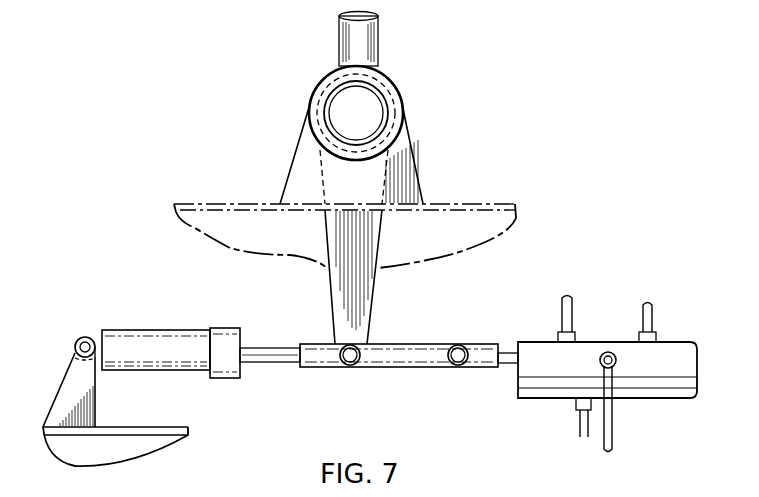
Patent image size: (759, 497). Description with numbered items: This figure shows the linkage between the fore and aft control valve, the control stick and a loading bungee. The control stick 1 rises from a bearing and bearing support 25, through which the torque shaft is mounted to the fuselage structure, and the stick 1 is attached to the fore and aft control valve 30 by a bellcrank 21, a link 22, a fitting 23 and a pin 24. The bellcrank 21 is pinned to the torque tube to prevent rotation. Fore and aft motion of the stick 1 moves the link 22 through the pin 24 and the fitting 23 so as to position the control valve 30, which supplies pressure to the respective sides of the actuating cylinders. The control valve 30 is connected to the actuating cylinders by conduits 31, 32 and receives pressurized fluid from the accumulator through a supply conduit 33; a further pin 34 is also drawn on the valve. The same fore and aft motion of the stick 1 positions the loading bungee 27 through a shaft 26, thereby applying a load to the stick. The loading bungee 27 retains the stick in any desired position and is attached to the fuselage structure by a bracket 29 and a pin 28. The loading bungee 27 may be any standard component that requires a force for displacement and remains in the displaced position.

The stick 1 is at (378, 47).
The bellcrank 21 is at (367, 316).
The link 22 is at (398, 368).
The fitting 23 is at (478, 366).
The pin 24 is at (350, 365).
The bearing and bearing support 25 is at (420, 190).
The shaft 26 is at (283, 364).
The loading bungee 27 is at (143, 330).
The pin 28 is at (84, 338).
The bracket 29 is at (92, 394).
The fore and aft control valve 30 is at (535, 342).
The conduit 31 is at (571, 310).
The conduit 32 is at (652, 318).
The supply conduit 33 is at (614, 420).
The pin 34 is at (580, 415).